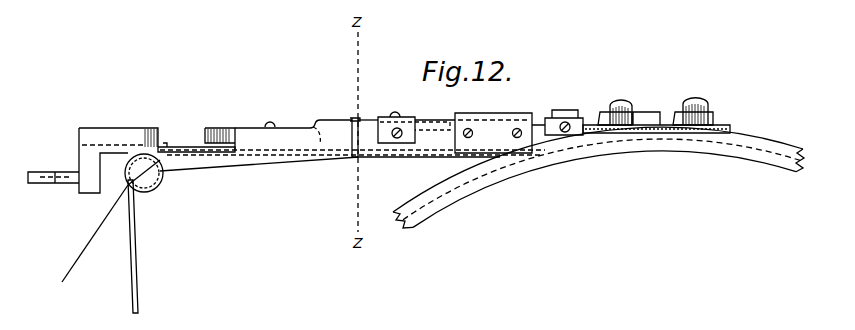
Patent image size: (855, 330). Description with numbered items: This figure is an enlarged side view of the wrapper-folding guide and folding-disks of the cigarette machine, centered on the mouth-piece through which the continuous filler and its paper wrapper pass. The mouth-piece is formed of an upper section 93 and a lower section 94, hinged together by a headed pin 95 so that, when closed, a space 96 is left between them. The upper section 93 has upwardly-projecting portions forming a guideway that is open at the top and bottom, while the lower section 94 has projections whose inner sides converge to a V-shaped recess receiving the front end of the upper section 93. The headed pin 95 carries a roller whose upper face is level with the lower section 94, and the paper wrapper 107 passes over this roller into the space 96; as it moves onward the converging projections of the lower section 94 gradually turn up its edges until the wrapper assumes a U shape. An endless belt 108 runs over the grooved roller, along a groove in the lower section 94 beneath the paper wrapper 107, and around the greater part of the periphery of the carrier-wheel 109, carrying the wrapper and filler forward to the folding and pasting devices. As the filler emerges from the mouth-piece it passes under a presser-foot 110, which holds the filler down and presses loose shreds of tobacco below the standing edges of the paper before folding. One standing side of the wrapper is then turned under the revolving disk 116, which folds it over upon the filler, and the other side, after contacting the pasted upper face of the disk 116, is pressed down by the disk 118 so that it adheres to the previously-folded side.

The upper section of the mouth-piece 93 is at (115, 128).
The lower section of the mouth-piece 94 is at (218, 163).
The headed pin 95 is at (152, 190).
The space 96 is at (170, 151).
The paper wrapper 107 is at (91, 233).
The endless belt 108 is at (138, 278).
The carrier-wheel 109 is at (673, 150).
The presser-foot 110 is at (423, 120).
The revolving disk 116 is at (582, 125).
The disk 118 is at (728, 128).